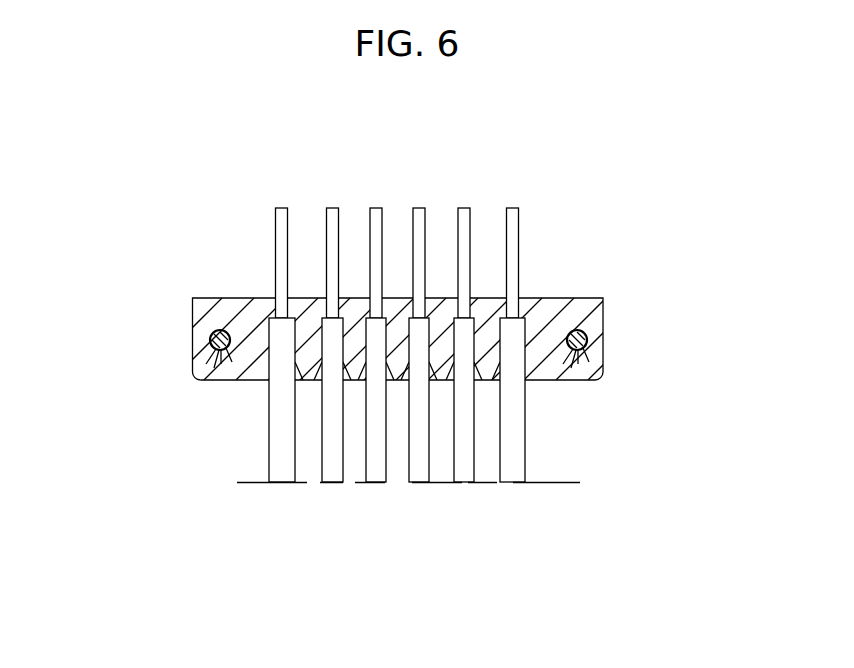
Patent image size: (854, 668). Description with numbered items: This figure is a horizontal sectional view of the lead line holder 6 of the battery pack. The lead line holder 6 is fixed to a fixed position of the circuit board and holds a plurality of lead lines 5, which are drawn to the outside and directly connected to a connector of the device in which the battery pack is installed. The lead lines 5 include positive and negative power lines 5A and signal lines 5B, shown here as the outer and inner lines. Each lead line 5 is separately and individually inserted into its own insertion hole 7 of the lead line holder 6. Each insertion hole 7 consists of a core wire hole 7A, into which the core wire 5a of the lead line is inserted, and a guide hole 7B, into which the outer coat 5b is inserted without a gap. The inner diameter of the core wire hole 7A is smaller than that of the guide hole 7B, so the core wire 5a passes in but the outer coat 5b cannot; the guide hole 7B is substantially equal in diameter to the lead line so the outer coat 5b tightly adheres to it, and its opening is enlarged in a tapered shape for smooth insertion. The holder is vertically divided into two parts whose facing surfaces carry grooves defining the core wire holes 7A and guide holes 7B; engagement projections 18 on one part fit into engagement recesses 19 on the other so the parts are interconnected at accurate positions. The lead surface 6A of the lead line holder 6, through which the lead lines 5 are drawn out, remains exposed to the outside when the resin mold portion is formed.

The lead lines 5 is at (395, 388).
The power lines 5A is at (266, 472).
The signal lines 5B is at (365, 478).
The core wire 5a is at (370, 223).
The outer coat 5b is at (270, 398).
The lead line holder 6 is at (397, 299).
The lead surface 6A is at (558, 382).
The insertion holes 7 is at (397, 224).
The core wire hole 7A is at (385, 295).
The guide hole 7B is at (363, 330).
The engagement projections 18 is at (210, 345).
The engagement recesses 19 is at (206, 382).